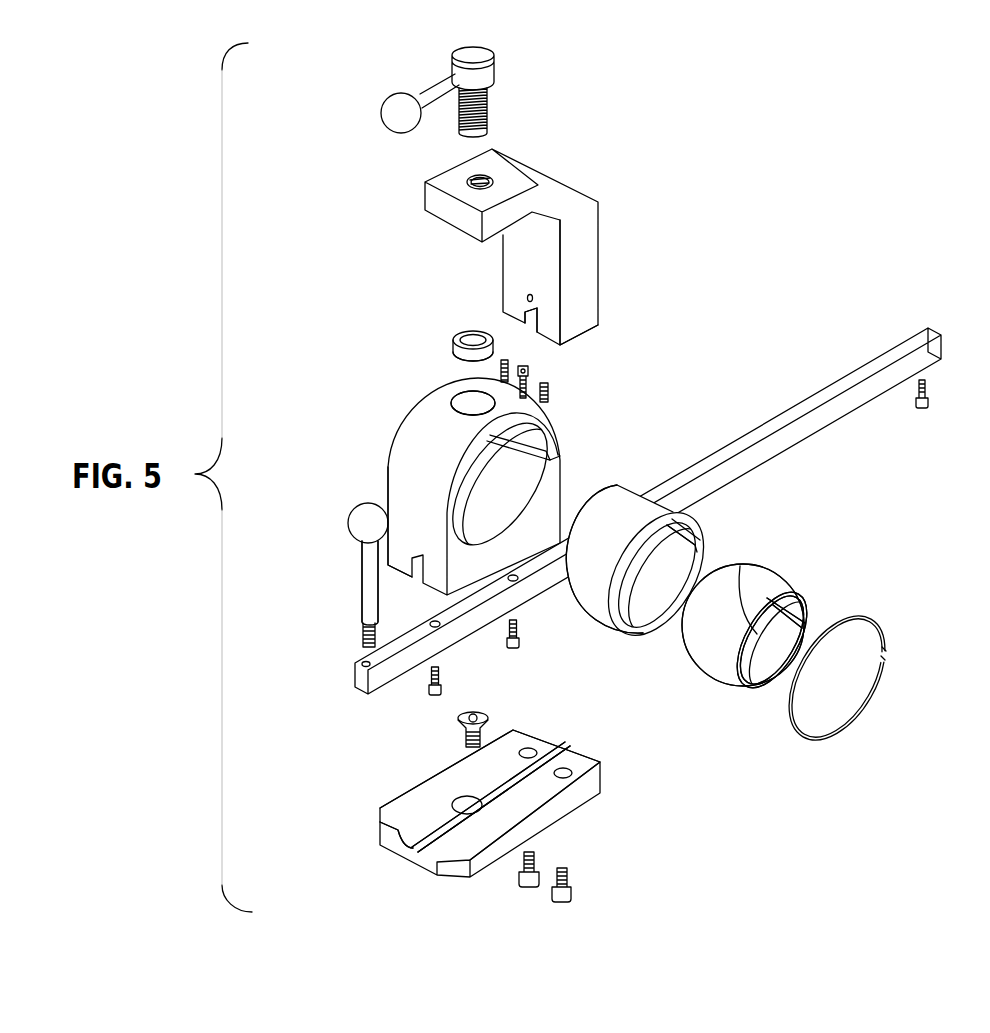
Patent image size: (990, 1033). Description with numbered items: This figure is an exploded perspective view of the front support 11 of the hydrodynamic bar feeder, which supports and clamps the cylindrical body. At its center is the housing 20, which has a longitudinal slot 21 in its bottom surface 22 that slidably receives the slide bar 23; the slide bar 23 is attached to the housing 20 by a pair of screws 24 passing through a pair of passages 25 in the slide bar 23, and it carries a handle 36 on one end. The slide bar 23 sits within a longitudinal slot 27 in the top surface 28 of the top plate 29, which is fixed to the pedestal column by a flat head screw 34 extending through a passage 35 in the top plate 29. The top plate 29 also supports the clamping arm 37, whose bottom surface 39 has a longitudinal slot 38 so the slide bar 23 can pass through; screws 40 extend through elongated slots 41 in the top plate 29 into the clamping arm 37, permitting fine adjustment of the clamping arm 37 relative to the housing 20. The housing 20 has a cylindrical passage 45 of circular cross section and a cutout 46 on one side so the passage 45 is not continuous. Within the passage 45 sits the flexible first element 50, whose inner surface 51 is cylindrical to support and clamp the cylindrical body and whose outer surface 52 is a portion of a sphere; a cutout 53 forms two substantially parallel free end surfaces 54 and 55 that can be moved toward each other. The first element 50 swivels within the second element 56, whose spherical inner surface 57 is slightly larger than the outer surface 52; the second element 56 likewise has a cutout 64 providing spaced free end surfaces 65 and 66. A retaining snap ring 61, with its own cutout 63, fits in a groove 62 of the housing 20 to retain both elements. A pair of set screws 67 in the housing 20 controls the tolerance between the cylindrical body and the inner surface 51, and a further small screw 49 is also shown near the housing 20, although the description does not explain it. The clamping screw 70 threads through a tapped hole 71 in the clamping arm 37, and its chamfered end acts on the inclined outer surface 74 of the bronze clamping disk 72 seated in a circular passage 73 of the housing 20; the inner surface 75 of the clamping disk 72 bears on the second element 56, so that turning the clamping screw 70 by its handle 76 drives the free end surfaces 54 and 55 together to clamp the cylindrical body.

The front support 11 is at (780, 318).
The housing 20 is at (383, 446).
The longitudinal slot 21 is at (405, 567).
The bottom surface 22 is at (402, 572).
The slide bar 23 is at (815, 375).
The screws 24 is at (443, 690).
The passages 25 is at (440, 626).
The longitudinal slot 27 is at (540, 777).
The top surface 28 is at (415, 797).
The top plate 29 is at (620, 786).
The flat head screw 34 is at (464, 738).
The passage 35 is at (476, 800).
The handle 36 is at (362, 595).
The clamping arm 37 is at (615, 228).
The longitudinal slot 38 is at (522, 320).
The bottom surface 39 is at (598, 335).
The screws 40 is at (539, 873).
The elongated slots 41 is at (540, 750).
The cylindrical passage 45 is at (523, 493).
The cutout 46 is at (560, 452).
The screw 49 is at (532, 370).
The first element 50 is at (812, 578).
The inner surface 51 is at (787, 647).
The outer surface 52 is at (707, 635).
The cutout 53 is at (808, 622).
The free end surface 54 is at (770, 600).
The free end surface 55 is at (770, 628).
The second element 56 is at (712, 500).
The inner surface 57 is at (675, 577).
The retaining snap ring 61 is at (884, 672).
The groove 62 is at (362, 642).
The cutout 63 is at (885, 652).
The cutout 64 is at (700, 548).
The free end surface 65 is at (600, 523).
The free end surface 66 is at (670, 578).
The set screws 67 is at (507, 358).
The clamping screw 70 is at (510, 68).
The tapped hole 71 is at (478, 190).
The clamping disk 72 is at (438, 342).
The circular passage 73 is at (440, 405).
The outer surface 74 is at (462, 331).
The inner surface 75 is at (455, 383).
The handle 76 is at (399, 133).